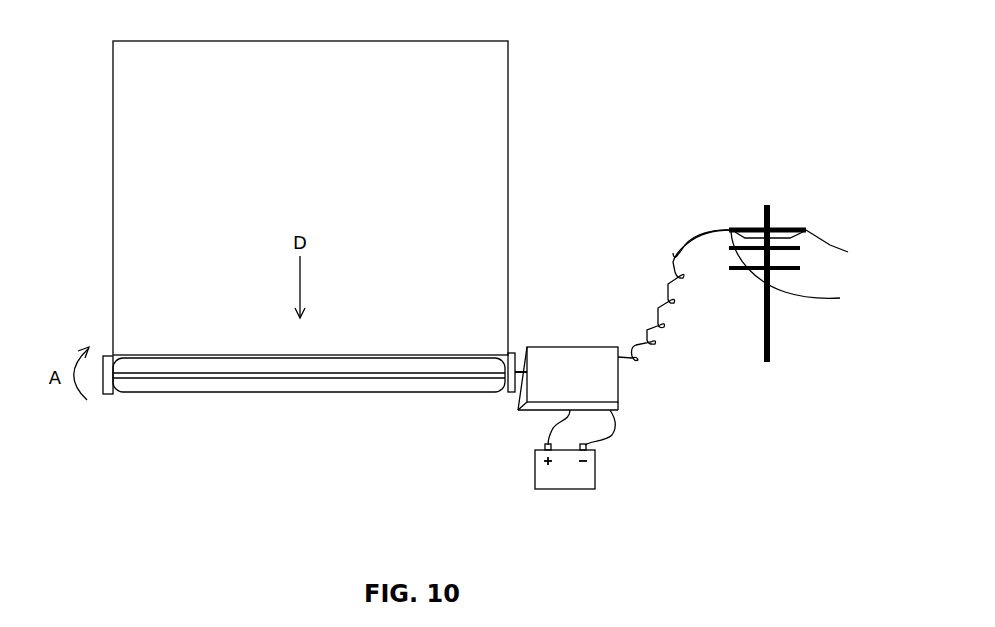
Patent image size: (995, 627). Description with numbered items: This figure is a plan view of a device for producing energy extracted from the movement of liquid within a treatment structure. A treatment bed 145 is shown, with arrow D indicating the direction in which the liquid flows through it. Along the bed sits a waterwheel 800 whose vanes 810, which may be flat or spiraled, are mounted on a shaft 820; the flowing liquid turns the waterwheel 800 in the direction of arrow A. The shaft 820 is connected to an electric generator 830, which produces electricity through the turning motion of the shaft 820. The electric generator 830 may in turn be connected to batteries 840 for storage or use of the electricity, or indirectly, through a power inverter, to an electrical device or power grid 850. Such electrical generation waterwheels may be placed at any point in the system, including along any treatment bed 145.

The screen panel 145 is at (283, 207).
The roller assembly 800 is at (415, 393).
The roller tube 810 is at (215, 385).
The roller shaft 820 is at (323, 377).
The motor control unit 830 is at (587, 372).
The battery 840 is at (567, 477).
The power line pole 850 is at (745, 225).